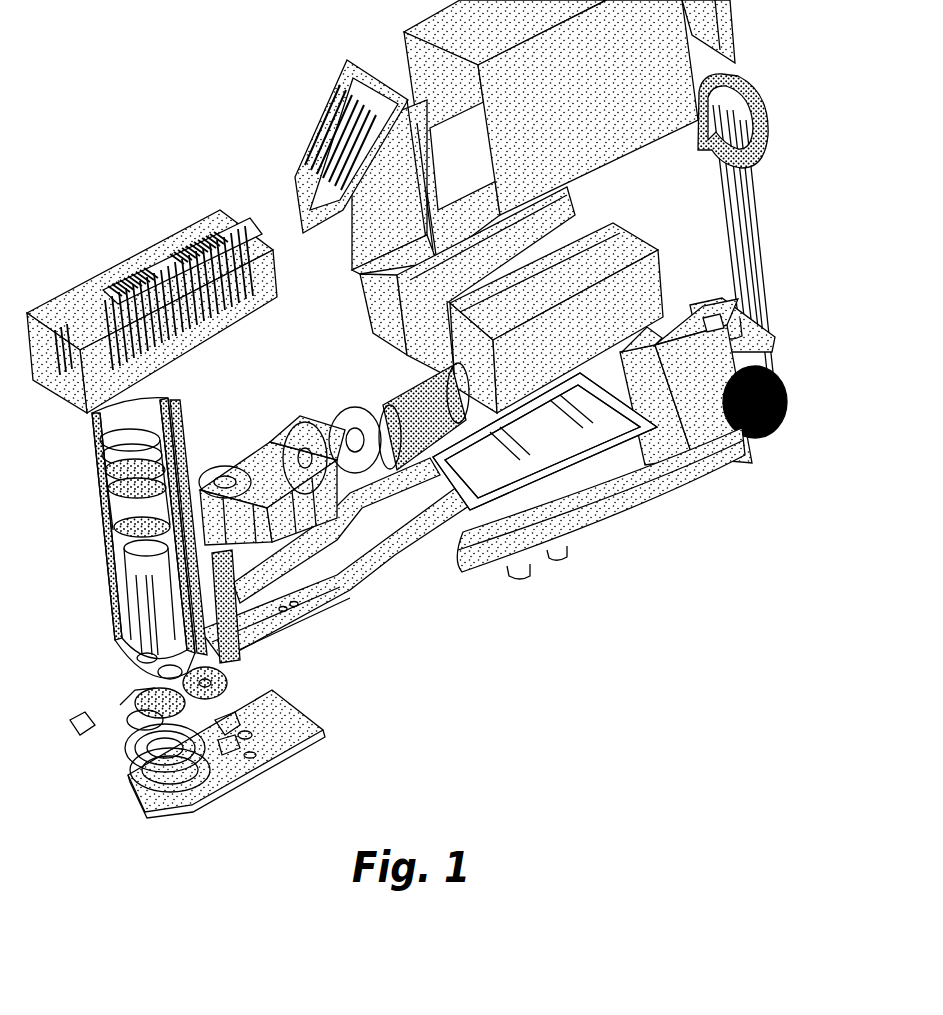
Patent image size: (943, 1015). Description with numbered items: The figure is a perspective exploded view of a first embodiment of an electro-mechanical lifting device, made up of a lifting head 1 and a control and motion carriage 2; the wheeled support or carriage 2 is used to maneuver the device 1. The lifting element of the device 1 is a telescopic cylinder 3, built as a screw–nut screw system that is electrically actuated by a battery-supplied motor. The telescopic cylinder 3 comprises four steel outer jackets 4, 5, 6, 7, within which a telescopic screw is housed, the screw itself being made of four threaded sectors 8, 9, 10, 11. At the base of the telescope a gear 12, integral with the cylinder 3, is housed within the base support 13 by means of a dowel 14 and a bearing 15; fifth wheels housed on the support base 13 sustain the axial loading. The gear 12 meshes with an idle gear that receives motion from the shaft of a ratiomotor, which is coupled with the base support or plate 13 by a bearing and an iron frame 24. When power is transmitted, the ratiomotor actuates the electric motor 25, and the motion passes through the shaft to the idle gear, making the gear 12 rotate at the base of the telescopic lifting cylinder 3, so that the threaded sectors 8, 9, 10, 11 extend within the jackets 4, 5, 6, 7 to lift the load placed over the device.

The lifting head 1 is at (117, 536).
The control and motion carriage 2 is at (820, 115).
The telescopic cylinder 3 is at (117, 536).
The outer jacket 4 is at (107, 633).
The outer jacket 5 is at (105, 560).
The outer jacket 6 is at (98, 487).
The outer jacket 7 is at (157, 448).
The threaded sector 8 is at (147, 583).
The threaded sector 9 is at (140, 653).
The threaded sector 10 is at (117, 460).
The threaded sector 11 is at (98, 540).
The gear 12 is at (130, 713).
The base support 13 is at (290, 706).
The dowel 14 is at (127, 770).
The bearing 15 is at (213, 750).
The iron frame 24 is at (597, 477).
The electric motor 25 is at (380, 387).